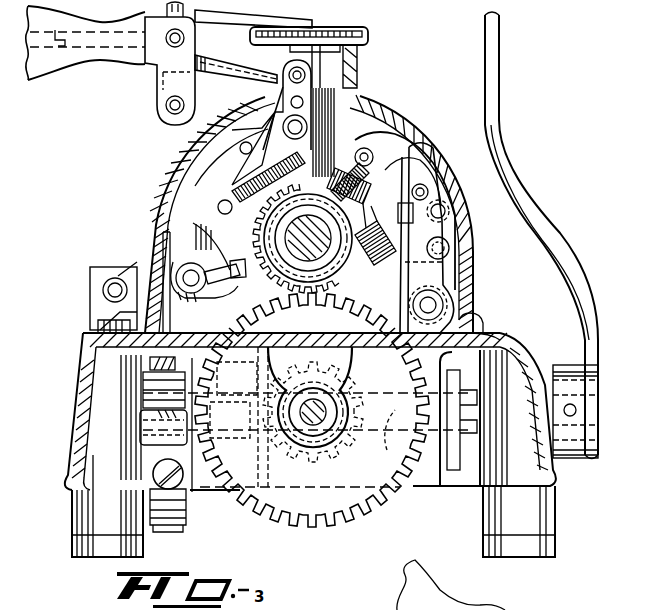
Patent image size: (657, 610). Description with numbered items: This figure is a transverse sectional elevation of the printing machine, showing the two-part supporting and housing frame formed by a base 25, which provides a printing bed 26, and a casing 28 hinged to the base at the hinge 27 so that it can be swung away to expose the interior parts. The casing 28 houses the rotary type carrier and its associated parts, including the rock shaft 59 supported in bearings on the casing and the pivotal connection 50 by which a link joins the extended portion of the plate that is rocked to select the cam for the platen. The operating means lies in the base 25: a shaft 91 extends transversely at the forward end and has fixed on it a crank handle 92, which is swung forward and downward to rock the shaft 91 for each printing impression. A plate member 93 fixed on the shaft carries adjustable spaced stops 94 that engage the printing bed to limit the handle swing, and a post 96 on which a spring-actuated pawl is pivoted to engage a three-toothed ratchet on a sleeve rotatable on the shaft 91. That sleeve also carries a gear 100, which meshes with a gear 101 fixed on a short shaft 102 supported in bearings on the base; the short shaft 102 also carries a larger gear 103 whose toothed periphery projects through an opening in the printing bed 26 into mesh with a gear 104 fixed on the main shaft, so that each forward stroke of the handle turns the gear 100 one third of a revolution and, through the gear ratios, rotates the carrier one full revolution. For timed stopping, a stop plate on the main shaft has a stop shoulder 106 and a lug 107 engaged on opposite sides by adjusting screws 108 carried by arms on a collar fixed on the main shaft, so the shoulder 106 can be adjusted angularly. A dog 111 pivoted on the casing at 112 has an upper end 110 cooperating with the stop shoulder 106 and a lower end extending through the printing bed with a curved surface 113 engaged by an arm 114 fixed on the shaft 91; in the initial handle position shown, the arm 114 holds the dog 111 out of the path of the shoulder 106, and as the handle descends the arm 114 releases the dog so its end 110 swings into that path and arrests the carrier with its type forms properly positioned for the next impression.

The base 25 is at (87, 365).
The printing bed 26 is at (282, 340).
The hinge 27 is at (115, 284).
The casing 28 is at (163, 163).
The pivotal connection 50 is at (340, 87).
The rock shaft 59 is at (194, 302).
The shaft 91 is at (470, 443).
The crank handle 92 is at (490, 112).
The plate member 93 is at (150, 450).
The adjustable spaced stops 94 is at (172, 513).
The post 96 is at (352, 372).
The gear 100 is at (268, 470).
The gear 101 is at (320, 457).
The short shaft 102 is at (323, 420).
The larger gear 103 is at (373, 512).
The gear 104 is at (246, 212).
The stop shoulder 106 is at (407, 136).
The lug 107 is at (400, 262).
The adjusting screws 108 is at (333, 150).
The end of dog 110 is at (442, 221).
The dog 111 is at (445, 257).
The pivot 112 is at (436, 300).
The curved surface 113 is at (402, 470).
The arm 114 is at (490, 348).